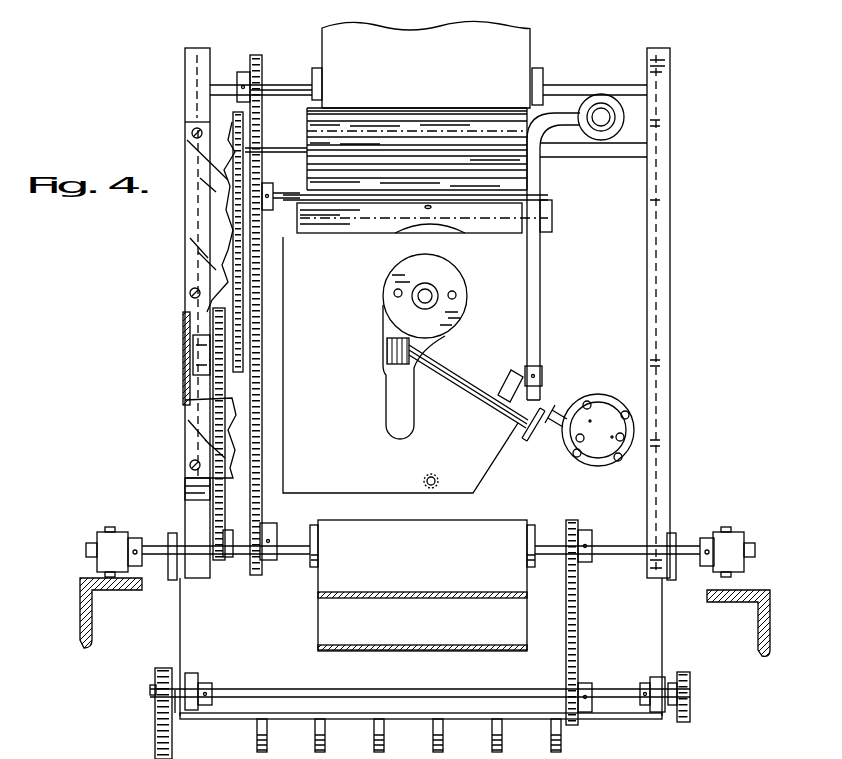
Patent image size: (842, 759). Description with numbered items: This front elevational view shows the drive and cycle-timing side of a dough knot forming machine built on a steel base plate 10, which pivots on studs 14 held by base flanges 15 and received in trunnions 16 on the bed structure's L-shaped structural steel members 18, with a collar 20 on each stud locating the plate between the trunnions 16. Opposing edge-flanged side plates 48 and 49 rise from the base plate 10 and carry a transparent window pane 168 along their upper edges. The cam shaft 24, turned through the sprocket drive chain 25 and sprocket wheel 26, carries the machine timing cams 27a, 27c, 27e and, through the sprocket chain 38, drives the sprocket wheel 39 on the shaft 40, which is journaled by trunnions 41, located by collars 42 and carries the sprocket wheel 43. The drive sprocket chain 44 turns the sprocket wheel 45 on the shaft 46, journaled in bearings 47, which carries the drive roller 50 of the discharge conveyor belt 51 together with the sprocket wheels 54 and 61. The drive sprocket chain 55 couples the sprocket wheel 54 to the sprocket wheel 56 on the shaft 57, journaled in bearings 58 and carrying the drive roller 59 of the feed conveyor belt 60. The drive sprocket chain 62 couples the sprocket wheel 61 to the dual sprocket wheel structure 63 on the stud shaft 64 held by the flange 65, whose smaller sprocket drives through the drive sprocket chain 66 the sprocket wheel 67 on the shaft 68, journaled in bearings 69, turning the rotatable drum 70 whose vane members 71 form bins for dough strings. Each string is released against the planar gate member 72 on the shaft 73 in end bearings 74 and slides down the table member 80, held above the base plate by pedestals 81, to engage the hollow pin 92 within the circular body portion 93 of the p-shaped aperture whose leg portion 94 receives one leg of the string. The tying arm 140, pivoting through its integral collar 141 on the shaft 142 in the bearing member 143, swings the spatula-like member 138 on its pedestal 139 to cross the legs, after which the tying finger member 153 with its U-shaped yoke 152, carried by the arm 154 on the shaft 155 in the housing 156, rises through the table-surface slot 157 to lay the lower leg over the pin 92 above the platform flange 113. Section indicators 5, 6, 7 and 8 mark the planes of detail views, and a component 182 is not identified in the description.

The base plate 10 is at (655, 334).
The transparent window pane 168 is at (215, 226).
The sprocket wheel 67 is at (190, 135).
The drive sprocket chain 66 is at (230, 283).
The side plate 49 is at (185, 492).
The shaft 57 is at (578, 82).
The drive roller 59 is at (540, 70).
The bearings 58 is at (185, 68).
The sprocket wheel 56 is at (243, 72).
The section line 5 is at (268, 50).
The feed conveyor belt 60 is at (452, 50).
The rotatable drum 70 is at (344, 150).
The vane members 71 is at (450, 142).
The shaft 68 is at (573, 150).
The bearings 69 is at (660, 152).
The end bearings 74 is at (660, 180).
The planar gate member 72 is at (566, 233).
The shaft 73 is at (584, 200).
The tying arm 140 is at (541, 312).
The integral collar 141 is at (616, 121).
The shaft 142 is at (606, 124).
The bearing member 143 is at (612, 100).
The drive sprocket chain 55 is at (262, 425).
The stud shaft 64 is at (245, 357).
The drive sprocket chain 62 is at (218, 393).
The drive sprocket chain 44 is at (578, 625).
The sprocket drive chain 25 is at (156, 728).
The sprocket chain 38 is at (688, 700).
The bearing block 182 is at (275, 207).
The dual sprocket wheel structure 63 is at (205, 342).
The flange 65 is at (186, 360).
The table member 80 is at (322, 480).
The pedestals 81 is at (438, 487).
The enlarged circular body portion 93 is at (396, 260).
The hollow pin 92 is at (437, 286).
The platform flange 113 is at (456, 284).
The leg portion 94 is at (390, 398).
The U-shaped yoke 152 is at (388, 348).
The tying finger member 153 is at (456, 383).
The table-surface slot 157 is at (433, 360).
The spatula-like member 138 is at (498, 376).
The pedestal 139 is at (542, 345).
The arm 154 is at (556, 392).
The shaft 155 is at (572, 402).
The housing 156 is at (613, 424).
The section line 8 is at (563, 422).
The section line 6 is at (367, 292).
The section line 7 is at (353, 360).
The side plate 48 is at (668, 468).
The discharge conveyor belt 51 is at (420, 655).
The drive roller 50 is at (540, 518).
The shaft 46 is at (565, 525).
The sprocket wheel 45 is at (588, 530).
The sprocket wheel 54 is at (268, 560).
The sprocket wheel 61 is at (229, 558).
The bearings 47 is at (197, 520).
The trunnions 16 is at (105, 530).
The collar 20 is at (133, 538).
The studs 14 is at (86, 550).
The structural steel members 18 is at (80, 618).
The base flanges 15 is at (172, 580).
The shaft 40 is at (605, 690).
The trunnions 41 is at (192, 673).
The collars 42 is at (208, 686).
The sprocket wheel 43 is at (588, 682).
The sprocket wheel 39 is at (672, 682).
The cam shaft 24 is at (150, 690).
The sprocket wheel 26 is at (176, 715).
The machine timing cam 27a is at (282, 745).
The machine timing cam 27c is at (386, 740).
The machine timing cam 27e is at (504, 740).